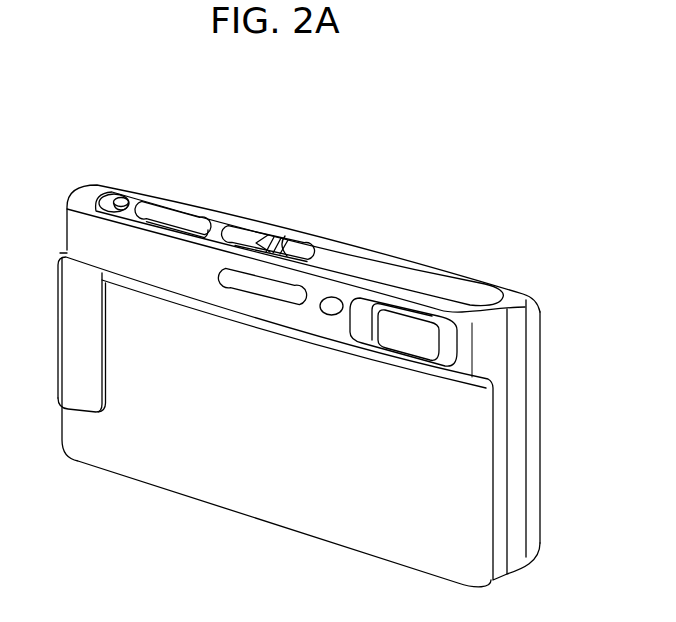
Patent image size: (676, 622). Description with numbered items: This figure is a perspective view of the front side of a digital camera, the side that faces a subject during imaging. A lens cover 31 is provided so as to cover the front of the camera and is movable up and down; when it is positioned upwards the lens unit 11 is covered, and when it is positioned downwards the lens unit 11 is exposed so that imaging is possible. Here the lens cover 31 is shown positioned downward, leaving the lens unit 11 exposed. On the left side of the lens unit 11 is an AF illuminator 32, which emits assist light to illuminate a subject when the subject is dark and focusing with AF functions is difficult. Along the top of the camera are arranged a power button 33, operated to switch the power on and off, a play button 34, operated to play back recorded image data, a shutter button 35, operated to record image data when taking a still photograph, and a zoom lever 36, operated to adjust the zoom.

The lens unit 11 is at (427, 336).
The lens cover 31 is at (462, 479).
The AF illuminator 32 is at (332, 300).
The power button 33 is at (300, 250).
The play button 34 is at (253, 240).
The shutter button 35 is at (160, 213).
The zoom lever 36 is at (121, 197).